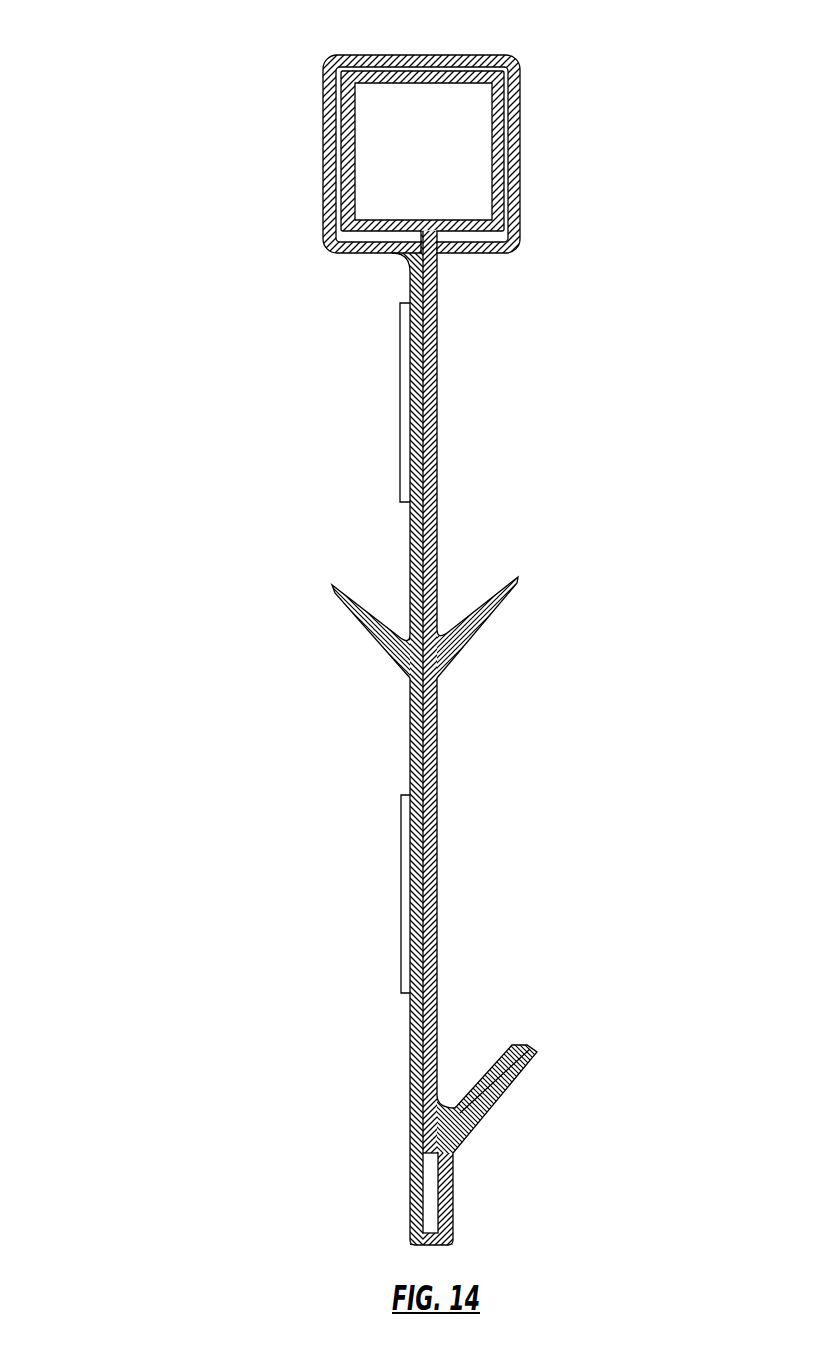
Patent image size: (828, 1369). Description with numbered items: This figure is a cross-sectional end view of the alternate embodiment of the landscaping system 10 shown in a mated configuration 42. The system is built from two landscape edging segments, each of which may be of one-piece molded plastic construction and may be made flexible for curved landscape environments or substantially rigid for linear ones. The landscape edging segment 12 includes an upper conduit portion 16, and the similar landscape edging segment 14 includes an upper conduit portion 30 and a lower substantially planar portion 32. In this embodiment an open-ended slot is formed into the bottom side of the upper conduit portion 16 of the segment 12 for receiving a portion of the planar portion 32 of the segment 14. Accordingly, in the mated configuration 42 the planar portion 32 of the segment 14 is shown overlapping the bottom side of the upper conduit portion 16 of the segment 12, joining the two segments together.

The landscaping system 10 is at (566, 94).
The mated configuration 42 is at (140, 143).
The upper conduit portion 16 is at (324, 153).
The upper conduit portion 30 is at (501, 146).
The landscape edging segment 12 is at (413, 281).
The landscape edging segment 14 is at (437, 397).
The lower substantially planar portion 32 is at (432, 261).